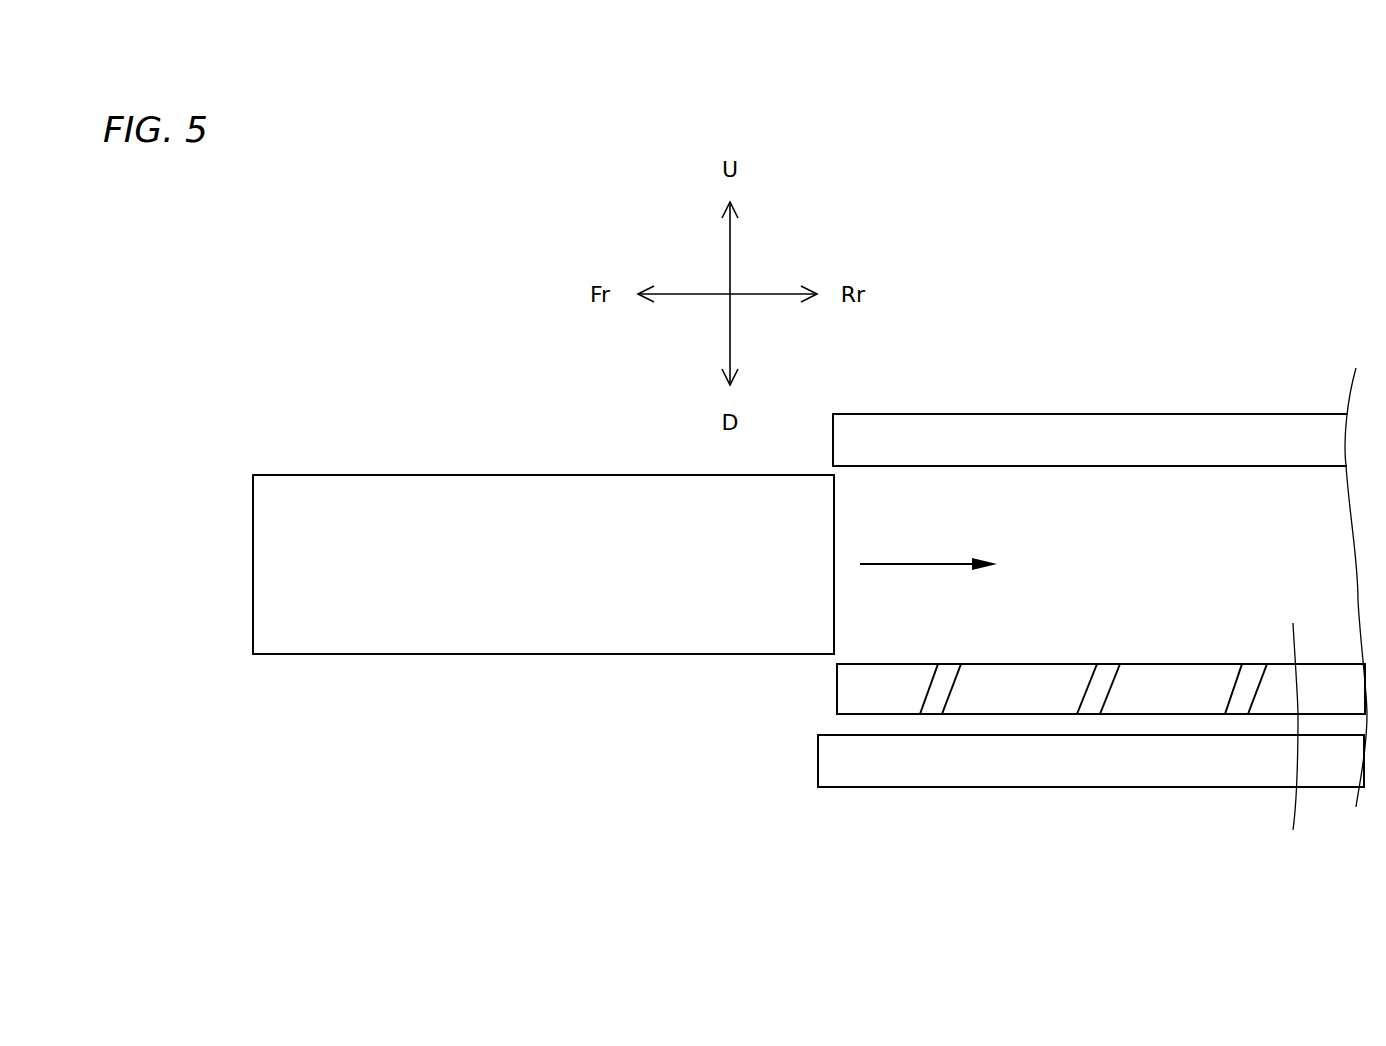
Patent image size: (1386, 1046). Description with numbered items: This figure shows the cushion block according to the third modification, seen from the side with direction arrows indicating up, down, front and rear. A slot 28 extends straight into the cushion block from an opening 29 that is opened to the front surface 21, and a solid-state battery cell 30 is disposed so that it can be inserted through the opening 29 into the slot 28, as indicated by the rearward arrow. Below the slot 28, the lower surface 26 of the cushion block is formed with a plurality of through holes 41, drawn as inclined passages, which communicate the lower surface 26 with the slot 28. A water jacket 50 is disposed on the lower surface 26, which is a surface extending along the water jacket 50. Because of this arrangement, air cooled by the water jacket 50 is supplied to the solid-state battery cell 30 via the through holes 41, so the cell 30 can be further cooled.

The front surface 21 is at (835, 687).
The lower surface 26 is at (1007, 715).
The slot 28 is at (1275, 881).
The opening 29 is at (849, 497).
The solid-state battery cell 30 is at (542, 654).
The through holes 41 is at (932, 708).
The water jacket 50 is at (1009, 776).